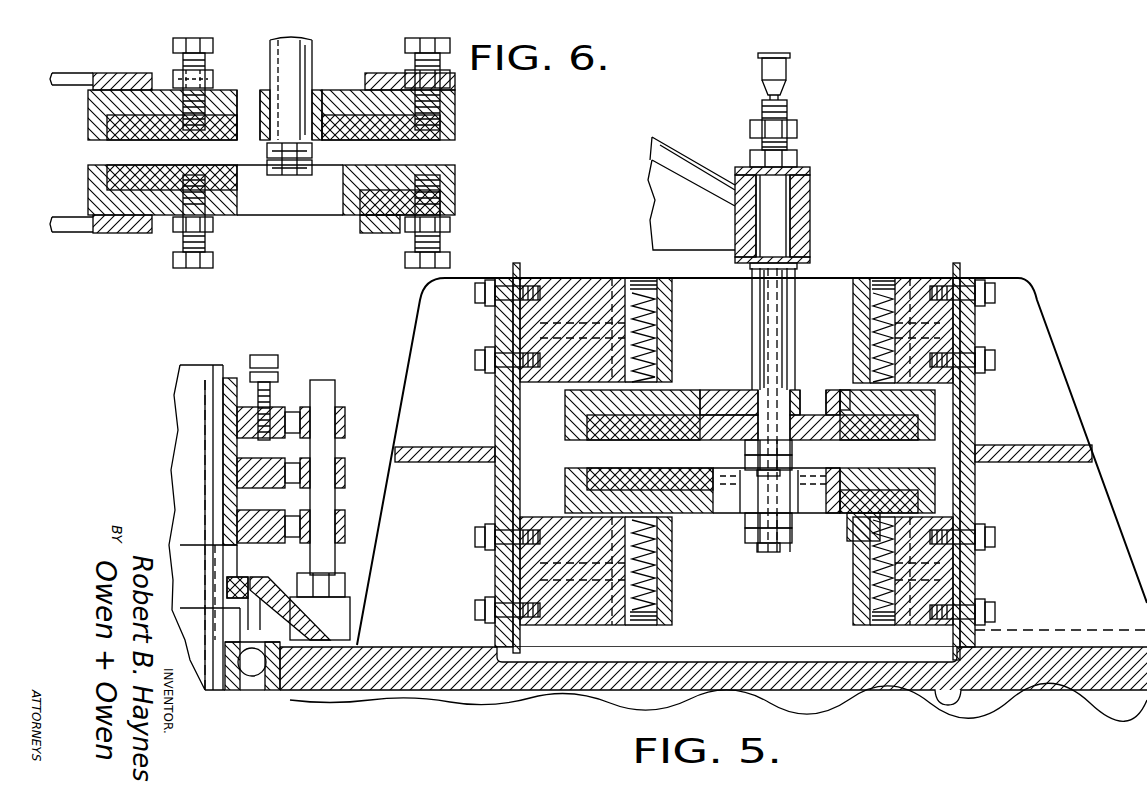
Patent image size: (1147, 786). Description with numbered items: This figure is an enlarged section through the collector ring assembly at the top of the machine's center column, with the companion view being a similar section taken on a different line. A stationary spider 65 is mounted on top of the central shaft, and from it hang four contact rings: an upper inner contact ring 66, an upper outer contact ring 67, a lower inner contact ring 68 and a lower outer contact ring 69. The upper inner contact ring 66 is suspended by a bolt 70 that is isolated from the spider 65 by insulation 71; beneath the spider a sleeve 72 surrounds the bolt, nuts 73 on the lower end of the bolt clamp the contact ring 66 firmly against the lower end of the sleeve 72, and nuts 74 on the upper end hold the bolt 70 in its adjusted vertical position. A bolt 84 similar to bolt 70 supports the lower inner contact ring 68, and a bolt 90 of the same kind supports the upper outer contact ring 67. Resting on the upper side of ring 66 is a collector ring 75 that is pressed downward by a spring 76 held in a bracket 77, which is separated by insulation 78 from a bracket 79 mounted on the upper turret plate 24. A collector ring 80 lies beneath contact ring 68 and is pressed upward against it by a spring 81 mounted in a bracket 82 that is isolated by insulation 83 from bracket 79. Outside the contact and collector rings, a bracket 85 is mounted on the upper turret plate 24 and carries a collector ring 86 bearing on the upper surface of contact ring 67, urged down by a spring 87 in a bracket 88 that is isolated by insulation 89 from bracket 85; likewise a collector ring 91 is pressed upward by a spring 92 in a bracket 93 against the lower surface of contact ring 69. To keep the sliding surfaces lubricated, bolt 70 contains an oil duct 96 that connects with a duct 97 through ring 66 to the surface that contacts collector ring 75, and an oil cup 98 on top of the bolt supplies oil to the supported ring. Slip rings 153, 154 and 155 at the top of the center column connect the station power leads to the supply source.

In FIG. 5, the upper turret plate 24 is at (383, 646).
In FIG. 5, the stationary spider 65 is at (700, 182).
In FIG. 6, the upper inner contact ring 66 is at (202, 132).
In FIG. 5, the upper inner contact ring 66 is at (650, 440).
In FIG. 6, the upper outer contact ring 67 is at (425, 132).
In FIG. 5, the upper outer contact ring 67 is at (920, 416).
In FIG. 6, the lower inner contact ring 68 is at (148, 168).
In FIG. 5, the lower inner contact ring 68 is at (630, 470).
In FIG. 6, the lower outer contact ring 69 is at (435, 180).
In FIG. 5, the lower outer contact ring 69 is at (935, 484).
In FIG. 5, the bolt 70 is at (790, 302).
In FIG. 5, the insulation 71 is at (811, 215).
In FIG. 5, the sleeve 72 is at (752, 350).
In FIG. 6, the nuts 73 is at (289, 159).
In FIG. 5, the nuts 73 is at (745, 450).
In FIG. 5, the nuts 74 is at (798, 160).
In FIG. 6, the collector ring 75 is at (95, 106).
In FIG. 5, the collector ring 75 is at (580, 400).
In FIG. 5, the spring 76 is at (660, 334).
In FIG. 5, the bracket 77 is at (572, 290).
In FIG. 5, the insulation 78 is at (520, 268).
In FIG. 5, the bracket 79 is at (497, 322).
In FIG. 6, the collector ring 80 is at (95, 190).
In FIG. 5, the collector ring 80 is at (580, 486).
In FIG. 5, the spring 81 is at (660, 560).
In FIG. 5, the bracket 82 is at (596, 628).
In FIG. 5, the insulation 83 is at (514, 634).
In FIG. 5, the bolt 84 is at (772, 555).
In FIG. 5, the bracket 85 is at (1086, 428).
In FIG. 5, the collector ring 86 is at (858, 388).
In FIG. 5, the spring 87 is at (872, 330).
In FIG. 5, the bracket 88 is at (928, 276).
In FIG. 5, the insulation 89 is at (960, 272).
In FIG. 6, the bolt 90 is at (290, 108).
In FIG. 6, the collector ring 91 is at (360, 220).
In FIG. 5, the collector ring 91 is at (858, 520).
In FIG. 5, the spring 92 is at (862, 598).
In FIG. 5, the bracket 93 is at (855, 615).
In FIG. 5, the oil duct 96 is at (765, 298).
In FIG. 5, the duct 97 is at (718, 394).
In FIG. 5, the oil cup 98 is at (790, 70).
In FIG. 5, the slip ring 153 is at (280, 405).
In FIG. 5, the slip ring 154 is at (295, 462).
In FIG. 5, the slip ring 155 is at (292, 516).